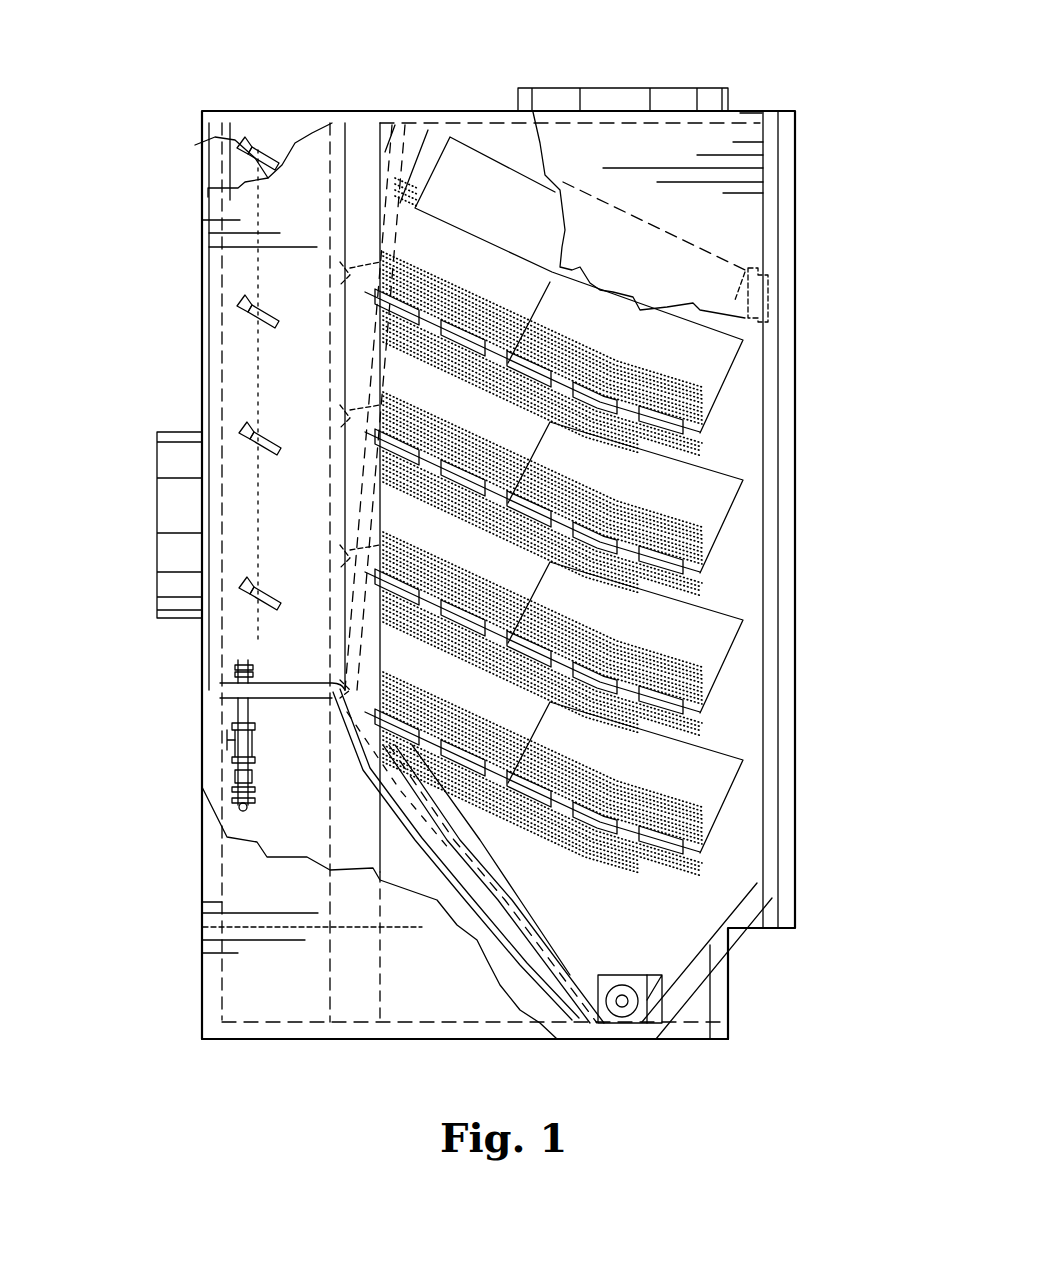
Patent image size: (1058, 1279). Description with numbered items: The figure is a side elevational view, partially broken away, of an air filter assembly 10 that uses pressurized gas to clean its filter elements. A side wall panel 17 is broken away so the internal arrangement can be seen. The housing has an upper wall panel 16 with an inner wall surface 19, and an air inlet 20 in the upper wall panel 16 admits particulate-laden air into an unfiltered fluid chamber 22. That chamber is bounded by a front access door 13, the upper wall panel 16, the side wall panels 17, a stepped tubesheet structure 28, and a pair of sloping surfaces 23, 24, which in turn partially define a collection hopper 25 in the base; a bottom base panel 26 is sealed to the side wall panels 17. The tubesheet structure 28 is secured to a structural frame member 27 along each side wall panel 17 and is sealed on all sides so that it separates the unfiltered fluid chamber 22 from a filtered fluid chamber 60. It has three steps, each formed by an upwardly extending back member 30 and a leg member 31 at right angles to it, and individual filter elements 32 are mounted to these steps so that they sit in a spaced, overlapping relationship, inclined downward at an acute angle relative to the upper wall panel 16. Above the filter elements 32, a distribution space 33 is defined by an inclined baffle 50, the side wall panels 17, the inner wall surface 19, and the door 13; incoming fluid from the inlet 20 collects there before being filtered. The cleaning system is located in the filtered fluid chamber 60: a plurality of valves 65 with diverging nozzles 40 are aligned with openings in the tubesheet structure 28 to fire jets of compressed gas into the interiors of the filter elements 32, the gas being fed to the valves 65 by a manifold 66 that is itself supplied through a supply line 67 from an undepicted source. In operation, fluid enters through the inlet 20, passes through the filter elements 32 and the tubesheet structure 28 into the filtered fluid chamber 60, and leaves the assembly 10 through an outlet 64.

The filter assembly 10 is at (593, 70).
The door 13 is at (797, 127).
The upper wall panel 16 is at (383, 120).
The side wall panel 17 is at (330, 120).
The inner wall surface 19 is at (490, 128).
The air inlet 20 is at (672, 88).
The unfiltered fluid chamber 22 is at (730, 568).
The sloping surface 23 is at (722, 945).
The sloping surface 24 is at (540, 905).
The hopper 25 is at (728, 872).
The bottom base panel 26 is at (340, 1039).
The structural frame member 27 is at (348, 825).
The tubesheet structure 28 is at (372, 218).
The back member 30 is at (352, 500).
The leg member 31 is at (350, 285).
The filter element 32 is at (383, 272).
The distribution space 33 is at (740, 130).
The diverging nozzle 40 is at (270, 140).
The inclined baffle 50 is at (712, 258).
The filtered fluid chamber 60 is at (262, 278).
The outlet 64 is at (178, 588).
The valve 65 is at (240, 148).
The manifold 66 is at (238, 670).
The supply line 67 is at (240, 745).